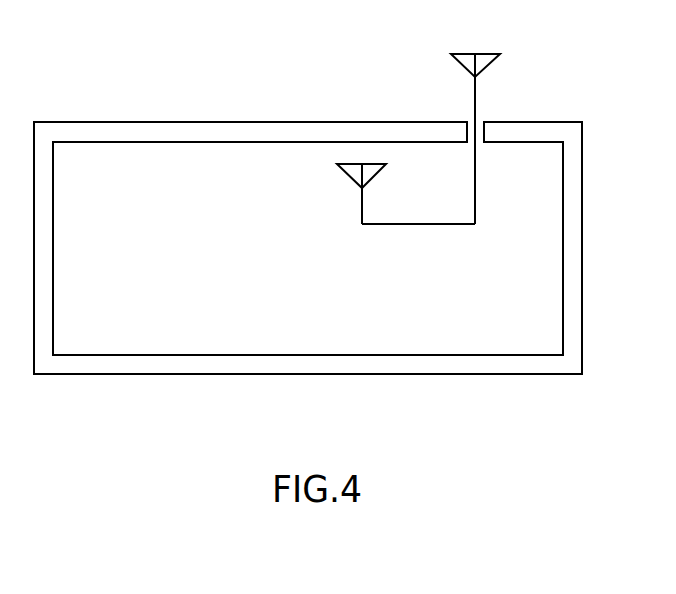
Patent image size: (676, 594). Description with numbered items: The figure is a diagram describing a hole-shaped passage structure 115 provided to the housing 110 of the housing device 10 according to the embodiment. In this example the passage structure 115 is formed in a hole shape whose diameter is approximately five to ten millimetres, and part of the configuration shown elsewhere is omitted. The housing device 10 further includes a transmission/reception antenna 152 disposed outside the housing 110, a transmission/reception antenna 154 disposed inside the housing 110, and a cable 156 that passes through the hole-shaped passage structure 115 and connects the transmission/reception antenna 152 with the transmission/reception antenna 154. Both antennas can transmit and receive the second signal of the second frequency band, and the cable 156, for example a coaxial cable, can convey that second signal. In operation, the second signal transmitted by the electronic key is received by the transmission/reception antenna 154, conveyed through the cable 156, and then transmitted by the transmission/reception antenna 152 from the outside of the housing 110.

The housing device 10 is at (280, 70).
The housing 110 is at (95, 113).
The passage structure 115 is at (483, 110).
The transmission/reception antenna 152 is at (447, 40).
The transmission/reception antenna 154 is at (327, 163).
The cable 156 is at (459, 236).